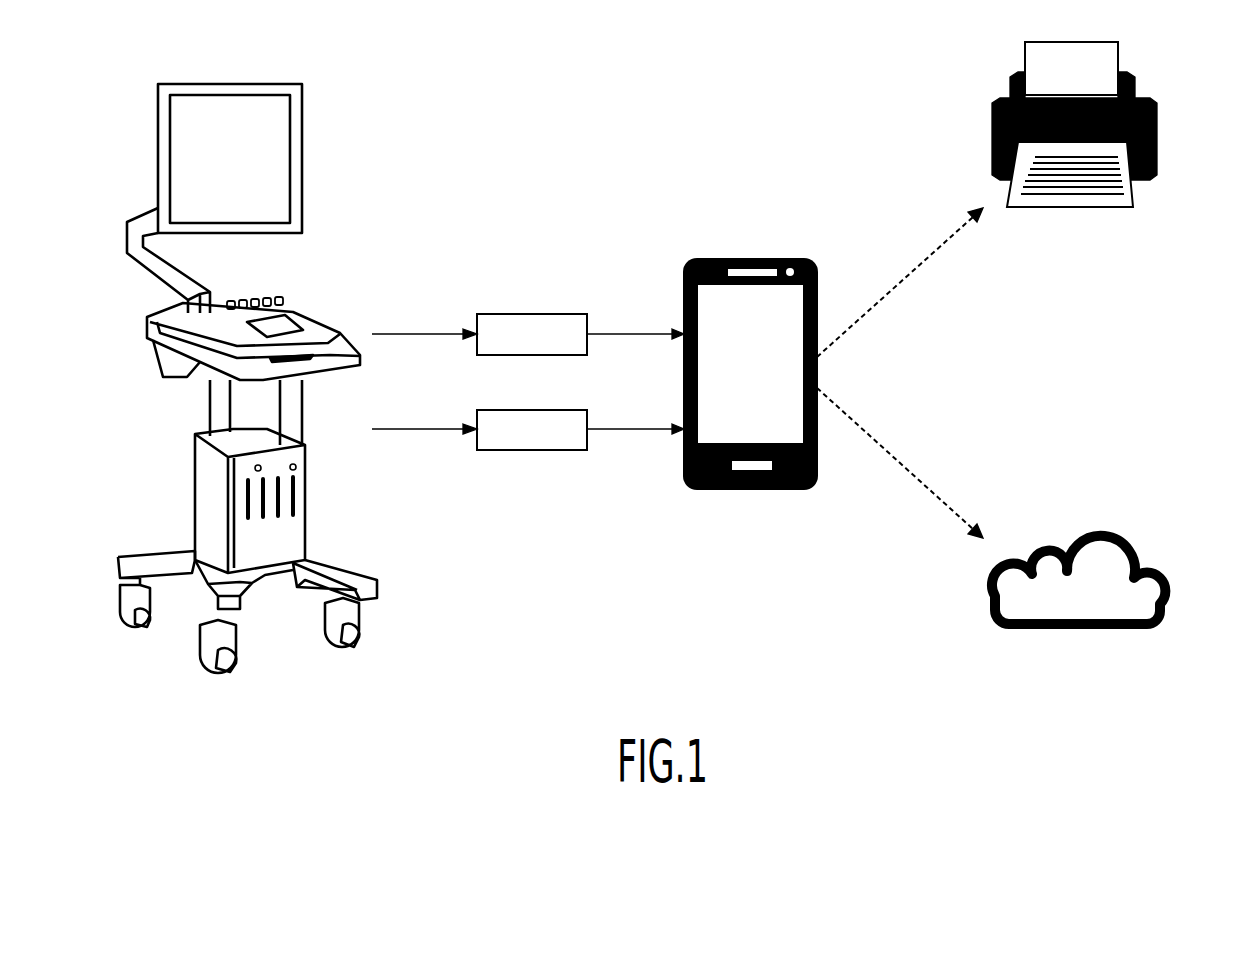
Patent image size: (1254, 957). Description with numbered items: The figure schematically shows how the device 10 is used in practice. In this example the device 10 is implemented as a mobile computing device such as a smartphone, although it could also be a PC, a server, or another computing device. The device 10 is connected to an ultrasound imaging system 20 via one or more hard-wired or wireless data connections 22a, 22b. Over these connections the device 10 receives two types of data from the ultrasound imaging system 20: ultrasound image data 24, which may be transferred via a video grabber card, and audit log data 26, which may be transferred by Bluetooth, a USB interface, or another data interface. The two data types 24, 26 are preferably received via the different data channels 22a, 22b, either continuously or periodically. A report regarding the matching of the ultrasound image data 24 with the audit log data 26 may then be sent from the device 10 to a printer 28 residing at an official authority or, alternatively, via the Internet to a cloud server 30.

The device 10 is at (784, 258).
The ultrasound imaging system 20 is at (303, 142).
The data connection 22a is at (622, 333).
The data connection 22b is at (637, 432).
The ultrasound image data 24 is at (516, 314).
The audit log data 26 is at (516, 452).
The printer 28 is at (1157, 118).
The cloud server 30 is at (1158, 575).